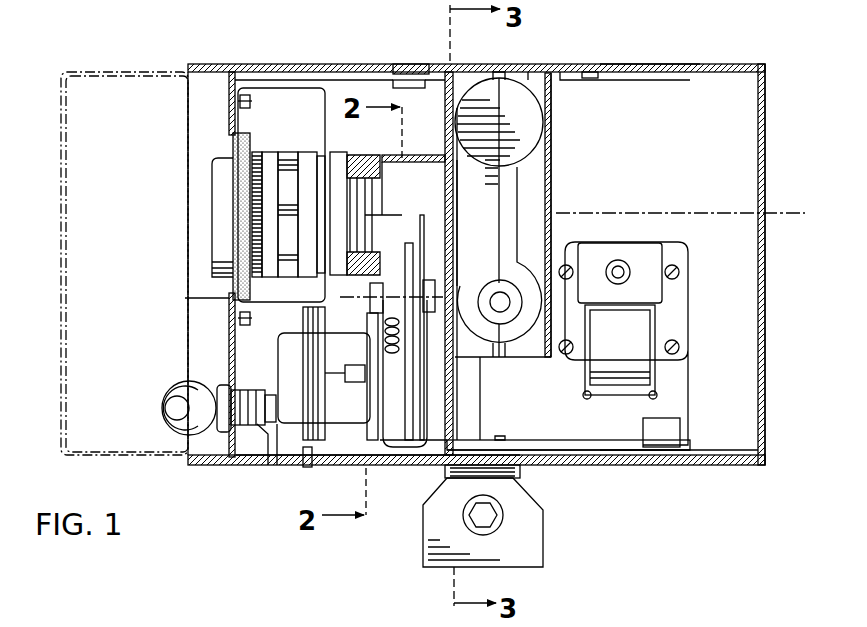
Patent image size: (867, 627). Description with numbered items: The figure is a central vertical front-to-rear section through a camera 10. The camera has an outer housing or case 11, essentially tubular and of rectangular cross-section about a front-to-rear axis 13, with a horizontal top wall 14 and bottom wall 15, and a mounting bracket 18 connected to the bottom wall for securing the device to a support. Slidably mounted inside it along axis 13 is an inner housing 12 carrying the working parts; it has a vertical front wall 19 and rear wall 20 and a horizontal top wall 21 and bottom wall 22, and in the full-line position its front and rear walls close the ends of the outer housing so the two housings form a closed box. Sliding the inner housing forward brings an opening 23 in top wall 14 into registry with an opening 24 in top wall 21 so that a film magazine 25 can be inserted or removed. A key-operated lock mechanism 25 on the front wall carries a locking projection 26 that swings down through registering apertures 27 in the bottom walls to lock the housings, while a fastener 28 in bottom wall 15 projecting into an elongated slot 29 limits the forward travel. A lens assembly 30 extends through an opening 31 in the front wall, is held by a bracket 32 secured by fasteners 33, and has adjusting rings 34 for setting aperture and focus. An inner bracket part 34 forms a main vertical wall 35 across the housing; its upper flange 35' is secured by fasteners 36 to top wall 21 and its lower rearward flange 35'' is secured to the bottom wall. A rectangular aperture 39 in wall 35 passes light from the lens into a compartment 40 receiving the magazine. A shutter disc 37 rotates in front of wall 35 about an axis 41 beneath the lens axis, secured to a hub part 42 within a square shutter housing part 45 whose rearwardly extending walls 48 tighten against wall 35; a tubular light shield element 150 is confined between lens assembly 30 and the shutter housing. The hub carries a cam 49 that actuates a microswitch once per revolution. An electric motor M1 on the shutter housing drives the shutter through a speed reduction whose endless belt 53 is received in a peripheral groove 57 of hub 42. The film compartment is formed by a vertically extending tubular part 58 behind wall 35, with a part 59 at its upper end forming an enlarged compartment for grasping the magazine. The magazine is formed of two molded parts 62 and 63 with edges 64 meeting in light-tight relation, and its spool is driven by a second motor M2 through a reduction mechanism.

The camera 10 is at (690, 58).
The outer housing 11 is at (213, 67).
The inner housing 12 is at (277, 66).
The front-to-rear axis 13 is at (640, 213).
The top wall 14 is at (568, 71).
The bottom wall 15 is at (405, 456).
The mounting bracket 18 is at (540, 516).
The front wall 19 is at (231, 334).
The rear wall 20 is at (766, 296).
The top wall 21 is at (633, 66).
The bottom wall 22 is at (244, 456).
The opening 23 is at (364, 72).
The opening 24 is at (528, 70).
The film magazine 25 is at (526, 130).
The locking projection 26 is at (256, 448).
The registering apertures 27 is at (277, 459).
The fastener 28 is at (305, 466).
The elongated slot 29 is at (477, 500).
The lens assembly 30 is at (211, 228).
The opening 31 is at (231, 141).
The bracket 32 is at (305, 88).
The fasteners 33 is at (250, 98).
The adjusting rings 34 is at (262, 185).
The main vertical wall 35 is at (465, 391).
The horizontally turned flange 35' is at (412, 45).
The rearwardly turned flange 35'' is at (646, 471).
The fasteners 36 is at (396, 86).
The shutter disc 37 is at (412, 376).
The rectangular aperture 39 is at (457, 191).
The film compartment 40 is at (552, 170).
The axis 41 is at (370, 298).
The hub part 42 is at (416, 362).
The shutter housing part 45 is at (404, 161).
The rearwardly extending walls 48 is at (433, 470).
The cam 49 is at (405, 258).
The endless belt 53 is at (416, 386).
The peripheral groove 57 is at (456, 228).
The tubular part 58 is at (552, 194).
The part 59 is at (600, 78).
The molded part 62 is at (473, 100).
The molded part 63 is at (548, 109).
The edges 64 is at (548, 153).
The tubular light shield element 150 is at (369, 152).
The electric motor M1 is at (280, 352).
The second motor M2 is at (655, 256).